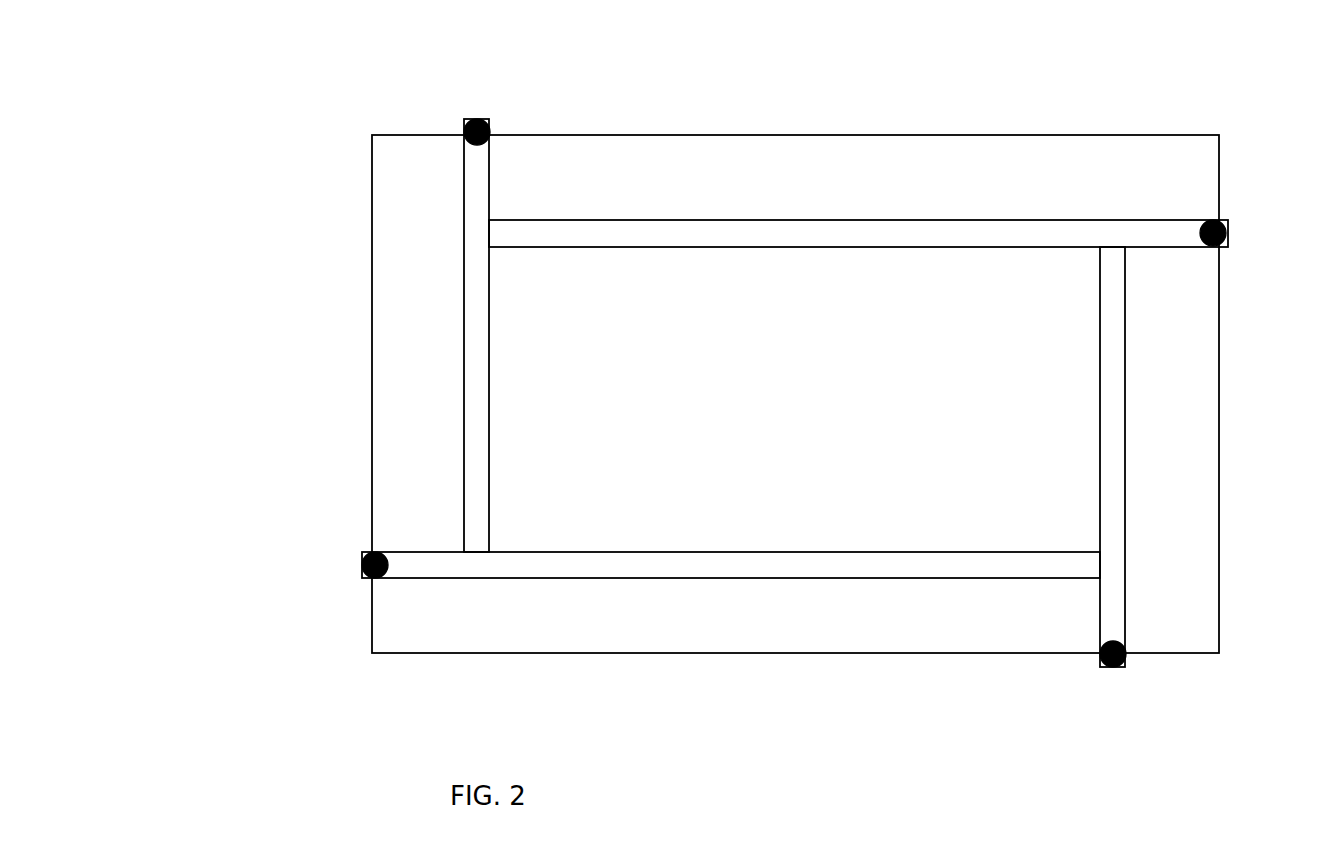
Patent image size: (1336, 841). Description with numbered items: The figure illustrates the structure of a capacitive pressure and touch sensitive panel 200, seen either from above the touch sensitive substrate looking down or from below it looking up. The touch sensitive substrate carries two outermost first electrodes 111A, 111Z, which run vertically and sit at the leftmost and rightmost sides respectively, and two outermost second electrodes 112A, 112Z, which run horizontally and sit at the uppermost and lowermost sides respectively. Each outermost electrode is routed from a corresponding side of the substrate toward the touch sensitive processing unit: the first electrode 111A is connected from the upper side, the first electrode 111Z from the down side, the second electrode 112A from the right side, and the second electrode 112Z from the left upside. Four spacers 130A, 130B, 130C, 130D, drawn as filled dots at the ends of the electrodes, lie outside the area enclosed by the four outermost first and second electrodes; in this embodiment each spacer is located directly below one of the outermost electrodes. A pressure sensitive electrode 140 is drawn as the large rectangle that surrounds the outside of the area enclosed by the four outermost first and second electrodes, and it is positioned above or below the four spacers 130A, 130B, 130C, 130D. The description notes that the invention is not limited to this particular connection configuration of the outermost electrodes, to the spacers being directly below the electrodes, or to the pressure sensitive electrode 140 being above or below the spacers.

The capacitive touch sensitive panel 200 is at (317, 83).
The pressure sensitive electrode 140 is at (846, 653).
The first electrode 111A is at (490, 168).
The first electrode 111Z is at (1127, 628).
The second electrode 112A is at (1176, 247).
The second electrode 112Z is at (413, 578).
The spacer 130A is at (375, 552).
The spacer 130B is at (475, 120).
The spacer 130C is at (1220, 220).
The spacer 130D is at (1100, 655).